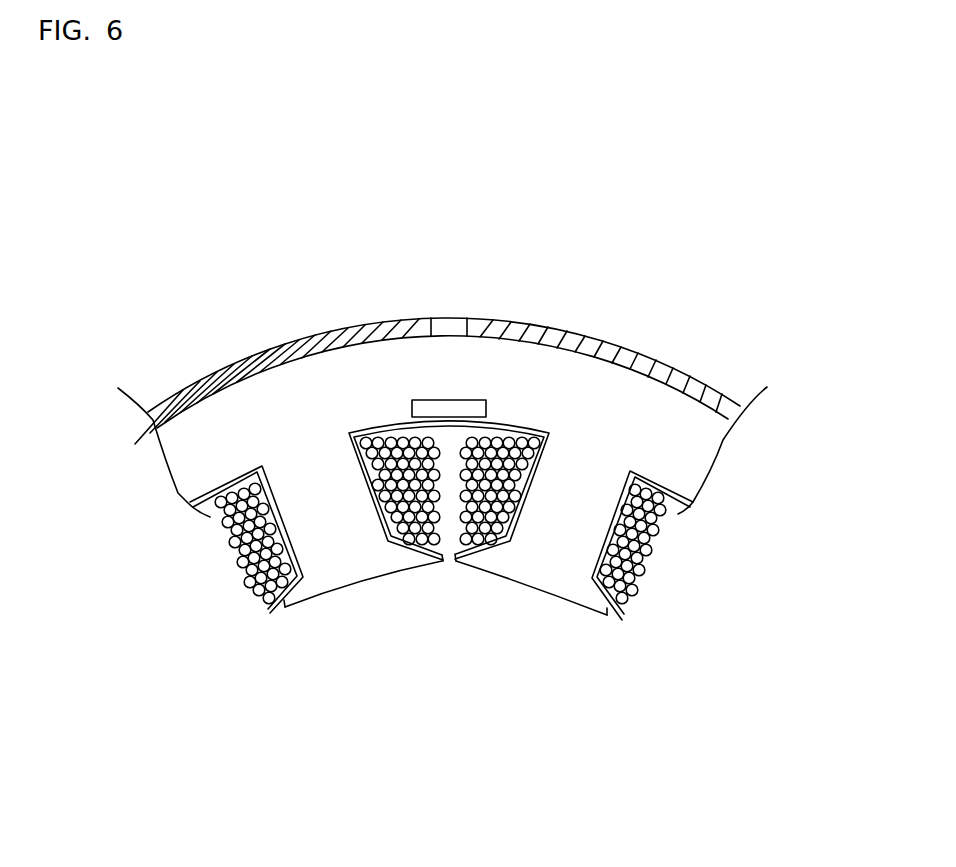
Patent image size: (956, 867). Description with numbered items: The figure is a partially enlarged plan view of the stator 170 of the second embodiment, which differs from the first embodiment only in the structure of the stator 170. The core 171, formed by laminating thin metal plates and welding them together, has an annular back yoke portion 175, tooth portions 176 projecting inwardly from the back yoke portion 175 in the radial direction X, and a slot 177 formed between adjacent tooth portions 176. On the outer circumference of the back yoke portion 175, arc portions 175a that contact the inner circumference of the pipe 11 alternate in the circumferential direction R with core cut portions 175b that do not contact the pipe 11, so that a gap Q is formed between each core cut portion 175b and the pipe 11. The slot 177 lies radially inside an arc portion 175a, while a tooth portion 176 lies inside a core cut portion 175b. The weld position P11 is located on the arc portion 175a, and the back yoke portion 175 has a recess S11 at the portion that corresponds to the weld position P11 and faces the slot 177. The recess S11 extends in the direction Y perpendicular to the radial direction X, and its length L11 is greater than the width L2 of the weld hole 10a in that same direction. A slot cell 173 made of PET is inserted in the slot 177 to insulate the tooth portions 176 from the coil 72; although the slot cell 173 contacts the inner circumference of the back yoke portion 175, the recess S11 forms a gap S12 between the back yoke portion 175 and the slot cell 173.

The weld hole 10a is at (446, 334).
The pipe 11 is at (185, 380).
The coil 72 is at (248, 556).
The stator 170 is at (437, 656).
The core 171 is at (642, 420).
The slot cell 173 is at (272, 620).
The back yoke portion 175 is at (197, 460).
The arc portion 175a is at (455, 336).
The core cut portion 175b is at (283, 352).
The tooth portion 176 is at (337, 527).
The slot 177 is at (447, 442).
The weld position P11 is at (451, 140).
The length of recess L11 is at (478, 199).
The width of weld hole L2 is at (459, 249).
The recess S11 is at (462, 412).
The gap S12 is at (428, 407).
The gap Q is at (253, 380).
The circumferential direction R is at (162, 356).
The radial direction X is at (447, 583).
The Y-direction Y is at (466, 382).